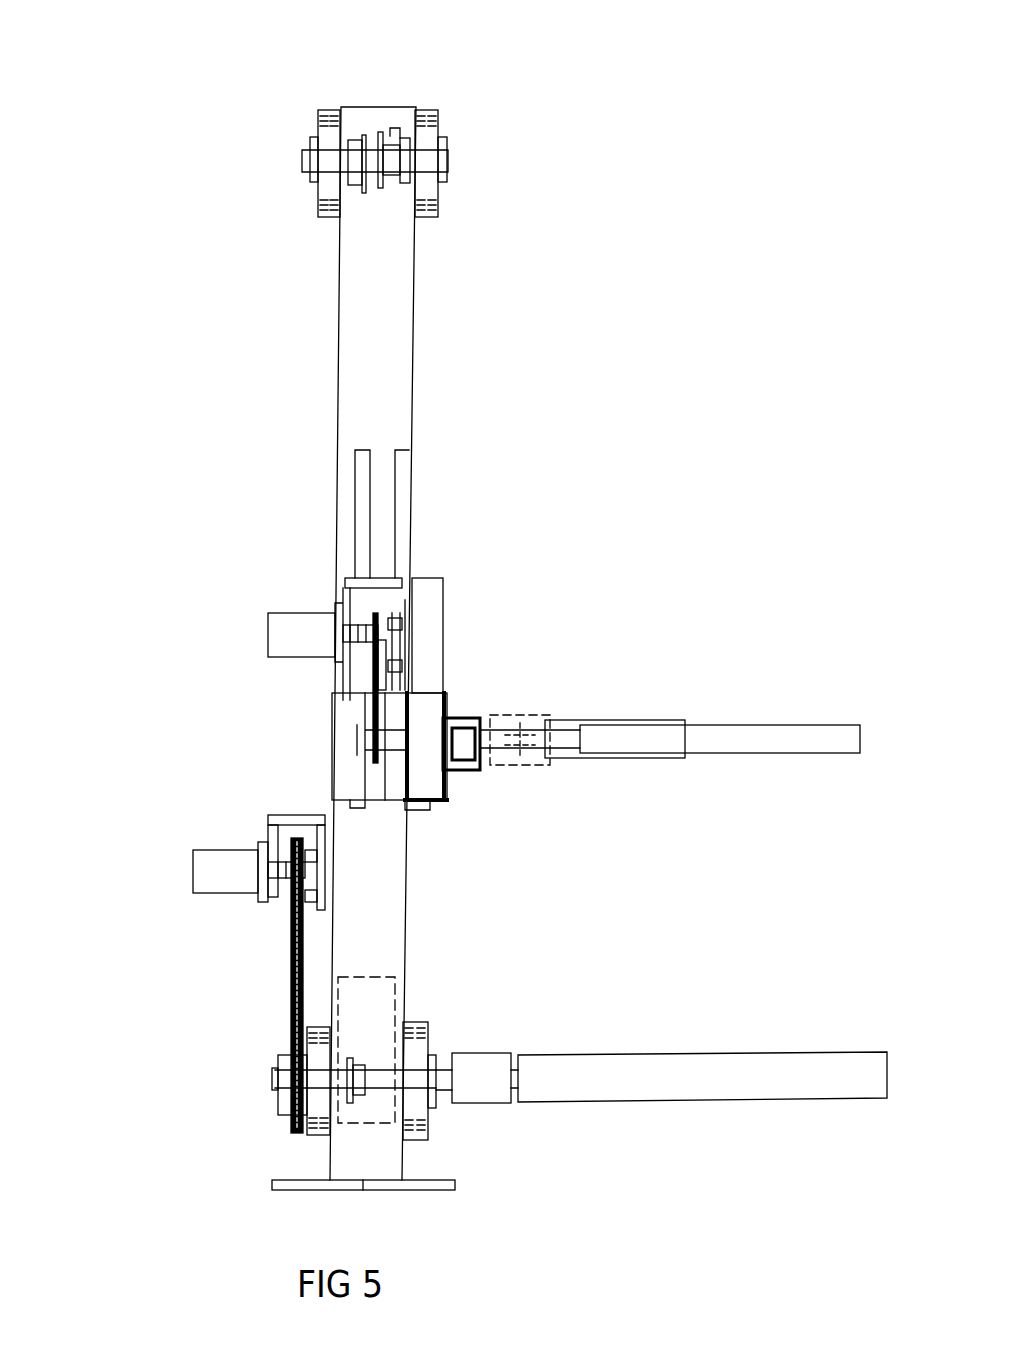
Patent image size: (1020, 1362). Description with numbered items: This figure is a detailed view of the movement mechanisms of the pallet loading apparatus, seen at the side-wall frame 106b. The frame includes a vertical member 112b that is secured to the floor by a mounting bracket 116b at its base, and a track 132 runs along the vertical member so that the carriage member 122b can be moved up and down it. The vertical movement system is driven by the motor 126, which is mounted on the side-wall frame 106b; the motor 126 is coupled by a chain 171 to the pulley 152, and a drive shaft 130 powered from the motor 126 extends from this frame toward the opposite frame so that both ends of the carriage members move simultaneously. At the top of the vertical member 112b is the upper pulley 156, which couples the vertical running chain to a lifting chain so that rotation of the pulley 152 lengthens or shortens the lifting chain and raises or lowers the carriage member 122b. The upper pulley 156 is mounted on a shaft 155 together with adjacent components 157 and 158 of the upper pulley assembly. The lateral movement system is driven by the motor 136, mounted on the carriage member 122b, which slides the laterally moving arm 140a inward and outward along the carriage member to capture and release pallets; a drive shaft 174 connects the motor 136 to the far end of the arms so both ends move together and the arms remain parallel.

The side-wall frame 106b is at (471, 624).
The vertical member 112b is at (454, 643).
The upper shaft 155 is at (281, 143).
The upper pulley 156 is at (282, 116).
The spacer 157 is at (445, 100).
The bearing 158 is at (459, 120).
The tracks 132 is at (441, 510).
The motor 136 is at (268, 667).
The carriage member 122b is at (463, 714).
The laterally moving arm 140a is at (589, 764).
The drive shaft 174 is at (732, 790).
The motor 126 is at (190, 881).
The chain 171 is at (216, 985).
The pulley 152 is at (432, 1042).
The drive shaft 130 is at (657, 1110).
The mounting bracket 116b is at (409, 1207).